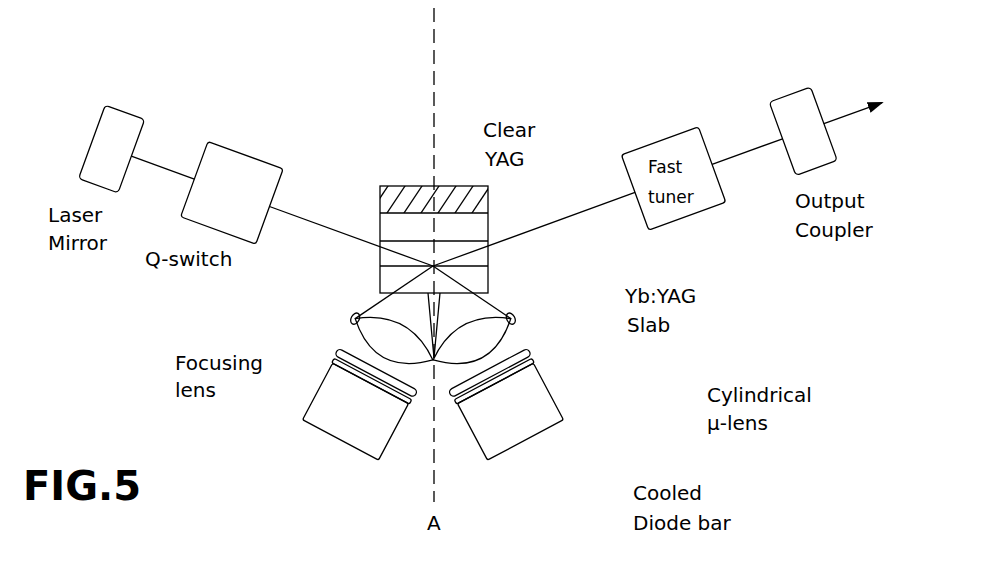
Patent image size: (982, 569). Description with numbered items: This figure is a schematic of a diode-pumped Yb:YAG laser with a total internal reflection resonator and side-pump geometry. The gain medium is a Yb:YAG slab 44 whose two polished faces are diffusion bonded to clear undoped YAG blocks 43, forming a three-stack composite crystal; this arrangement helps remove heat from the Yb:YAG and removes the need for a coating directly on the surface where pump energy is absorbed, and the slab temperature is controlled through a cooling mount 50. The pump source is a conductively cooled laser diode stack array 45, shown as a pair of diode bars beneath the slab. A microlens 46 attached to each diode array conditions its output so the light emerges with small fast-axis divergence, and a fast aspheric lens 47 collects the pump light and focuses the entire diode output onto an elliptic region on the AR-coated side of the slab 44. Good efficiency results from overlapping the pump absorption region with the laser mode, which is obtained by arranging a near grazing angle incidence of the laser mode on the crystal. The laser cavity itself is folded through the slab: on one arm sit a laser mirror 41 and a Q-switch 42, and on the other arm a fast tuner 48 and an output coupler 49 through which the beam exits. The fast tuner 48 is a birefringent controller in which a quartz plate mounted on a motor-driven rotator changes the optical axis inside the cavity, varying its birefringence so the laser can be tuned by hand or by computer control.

The laser mirror 41 is at (113, 104).
The Q-switch 42 is at (232, 145).
The clear undoped YAG block 43 is at (438, 168).
The Yb:YAG slab 44 is at (490, 273).
The conductively cooled laser diode stack array 45 is at (536, 441).
The microlens 46 is at (507, 379).
The fast aspheric lens 47 is at (349, 319).
The fast tuner 48 is at (662, 139).
The output coupler 49 is at (811, 96).
The cooling mount 50 is at (412, 157).